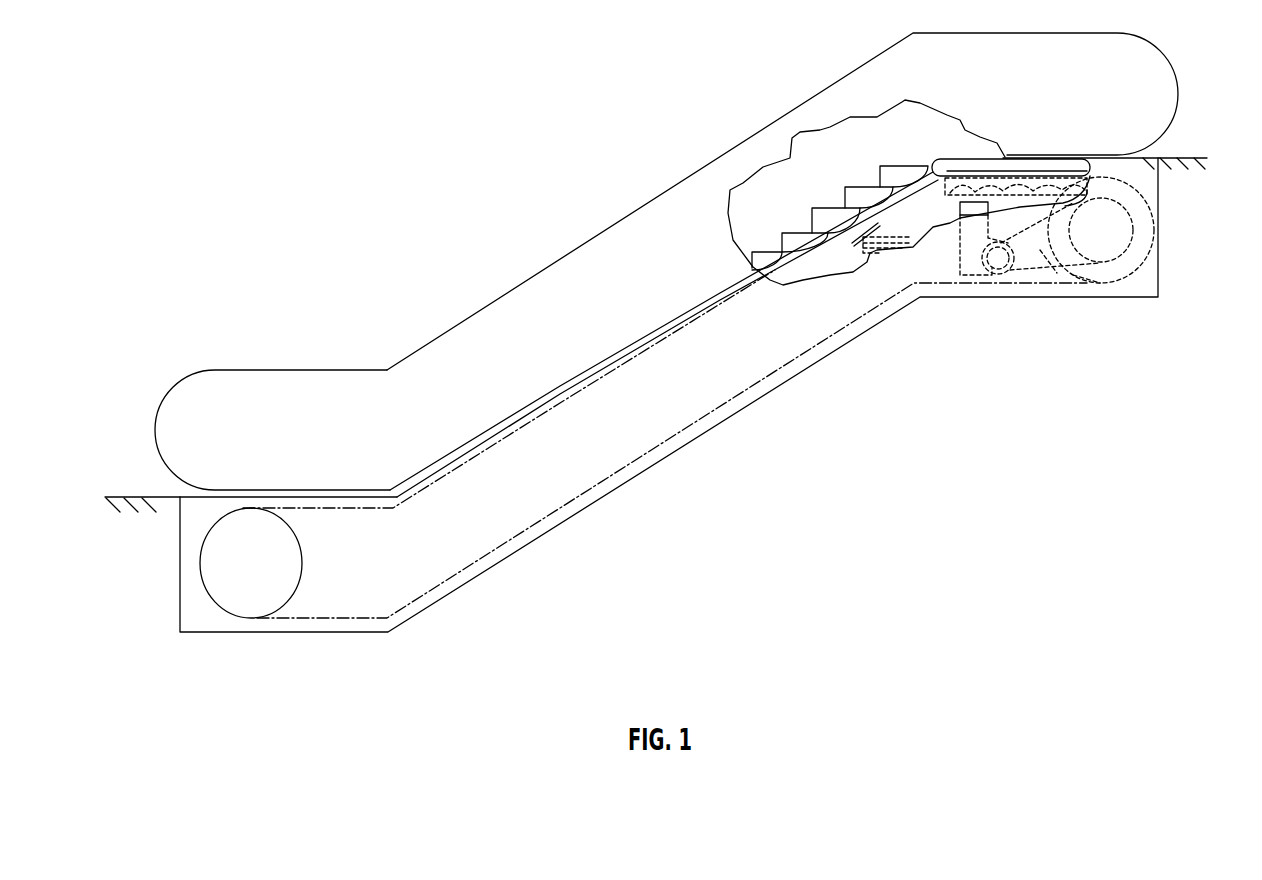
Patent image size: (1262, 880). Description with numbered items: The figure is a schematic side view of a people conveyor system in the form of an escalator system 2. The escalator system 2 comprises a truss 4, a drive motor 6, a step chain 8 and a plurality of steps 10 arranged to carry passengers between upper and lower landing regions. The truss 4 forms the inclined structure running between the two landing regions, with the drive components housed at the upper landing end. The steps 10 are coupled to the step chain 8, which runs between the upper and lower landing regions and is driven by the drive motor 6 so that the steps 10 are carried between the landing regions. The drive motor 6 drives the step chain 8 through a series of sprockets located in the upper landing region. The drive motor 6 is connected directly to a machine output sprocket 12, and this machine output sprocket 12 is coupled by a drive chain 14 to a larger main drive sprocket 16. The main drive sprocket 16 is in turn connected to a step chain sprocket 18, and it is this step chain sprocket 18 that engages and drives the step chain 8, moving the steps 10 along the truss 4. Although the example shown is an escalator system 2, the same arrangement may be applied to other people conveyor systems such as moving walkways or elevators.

The escalator system 2 is at (543, 95).
The truss 4 is at (1038, 298).
The drive motor 6 is at (962, 259).
The step chain 8 is at (647, 454).
The steps 10 is at (795, 232).
The machine output sprocket 12 is at (989, 276).
The drive chain 14 is at (1053, 268).
The main drive sprocket 16 is at (1107, 263).
The step chain sprocket 18 is at (1145, 262).